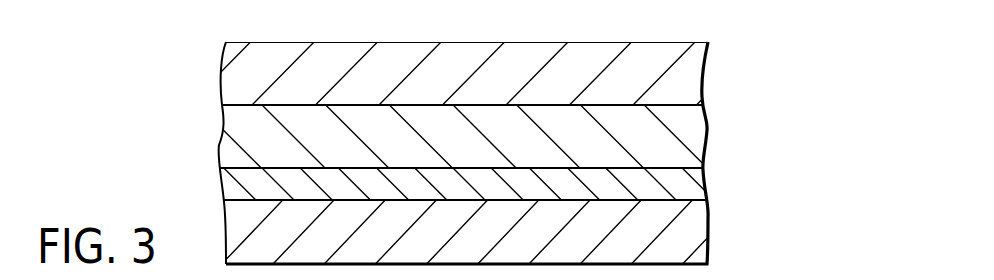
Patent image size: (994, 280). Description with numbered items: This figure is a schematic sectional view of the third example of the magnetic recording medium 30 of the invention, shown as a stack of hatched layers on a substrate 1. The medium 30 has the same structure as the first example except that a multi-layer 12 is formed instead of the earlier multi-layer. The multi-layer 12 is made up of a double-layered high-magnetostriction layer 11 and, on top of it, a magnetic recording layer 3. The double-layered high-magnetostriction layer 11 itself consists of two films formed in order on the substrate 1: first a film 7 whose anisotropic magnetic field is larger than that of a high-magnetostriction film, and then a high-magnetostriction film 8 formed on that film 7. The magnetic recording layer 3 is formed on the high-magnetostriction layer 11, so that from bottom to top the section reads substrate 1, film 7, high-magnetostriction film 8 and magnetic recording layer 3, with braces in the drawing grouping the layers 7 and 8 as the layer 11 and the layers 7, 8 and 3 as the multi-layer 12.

The substrate 1 is at (690, 233).
The magnetic recording layer 3 is at (690, 73).
The film whose anisotropic magnetic field is larger than that of a high-magnetostric 7 is at (485, 184).
The high-magnetostriction film 8 is at (690, 138).
The double-layered high-magnetostriction layer 11 is at (499, 154).
The multi-layer 12 is at (521, 123).
The magnetic recording medium 30 is at (544, 153).